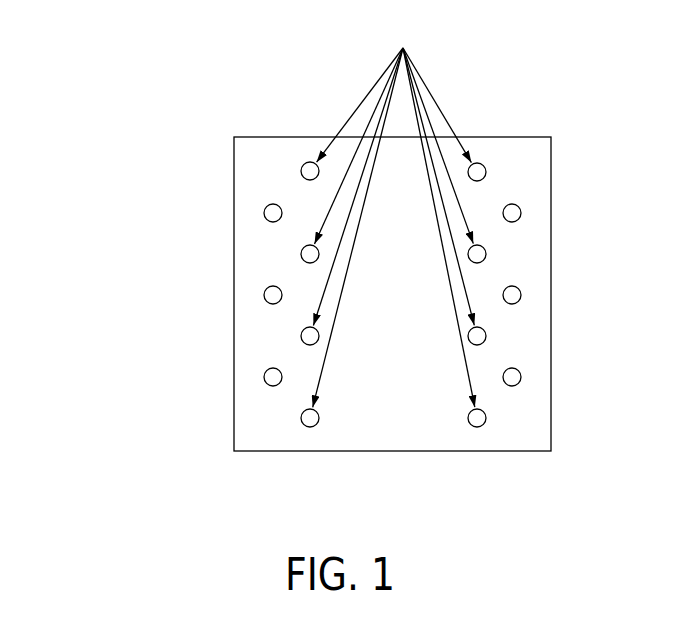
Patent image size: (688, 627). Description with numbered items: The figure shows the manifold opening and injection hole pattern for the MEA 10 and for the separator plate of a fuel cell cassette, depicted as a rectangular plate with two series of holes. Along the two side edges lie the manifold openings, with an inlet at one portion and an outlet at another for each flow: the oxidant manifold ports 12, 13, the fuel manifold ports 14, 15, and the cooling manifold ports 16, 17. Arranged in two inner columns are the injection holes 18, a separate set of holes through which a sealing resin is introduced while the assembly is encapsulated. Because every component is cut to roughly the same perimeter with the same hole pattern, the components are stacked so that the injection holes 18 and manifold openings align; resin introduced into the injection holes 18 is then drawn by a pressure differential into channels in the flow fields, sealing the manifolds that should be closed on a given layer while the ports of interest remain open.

The MEA 10 is at (55, 160).
The oxidant manifold port 12 is at (523, 377).
The oxidant manifold port 13 is at (262, 213).
The fuel manifold port 14 is at (523, 213).
The fuel manifold port 15 is at (262, 377).
The cooling manifold port 16 is at (523, 295).
The cooling manifold port 17 is at (262, 295).
The injection holes 18 is at (403, 48).